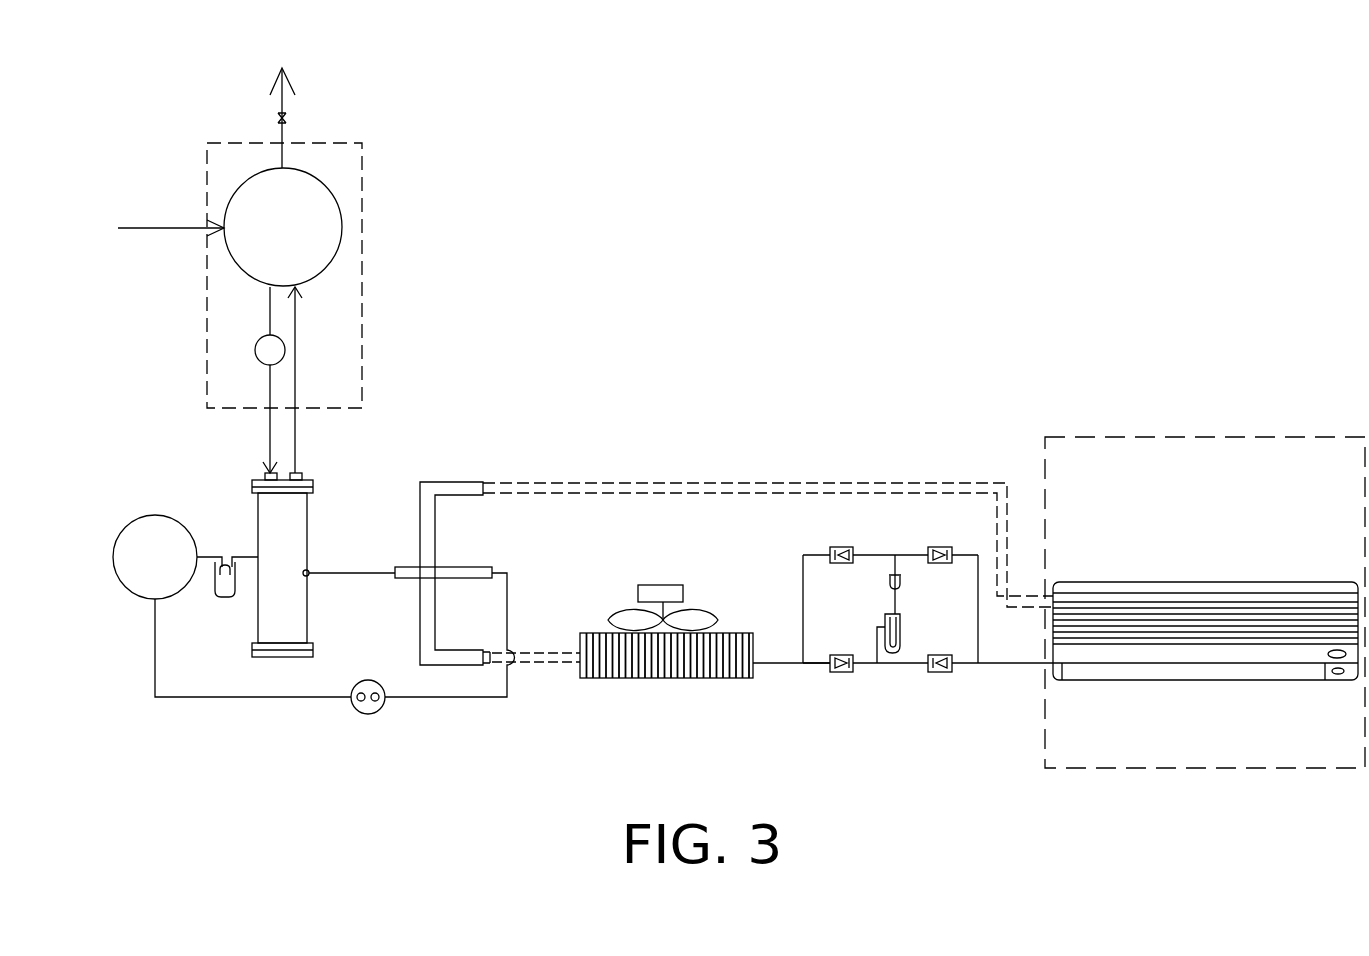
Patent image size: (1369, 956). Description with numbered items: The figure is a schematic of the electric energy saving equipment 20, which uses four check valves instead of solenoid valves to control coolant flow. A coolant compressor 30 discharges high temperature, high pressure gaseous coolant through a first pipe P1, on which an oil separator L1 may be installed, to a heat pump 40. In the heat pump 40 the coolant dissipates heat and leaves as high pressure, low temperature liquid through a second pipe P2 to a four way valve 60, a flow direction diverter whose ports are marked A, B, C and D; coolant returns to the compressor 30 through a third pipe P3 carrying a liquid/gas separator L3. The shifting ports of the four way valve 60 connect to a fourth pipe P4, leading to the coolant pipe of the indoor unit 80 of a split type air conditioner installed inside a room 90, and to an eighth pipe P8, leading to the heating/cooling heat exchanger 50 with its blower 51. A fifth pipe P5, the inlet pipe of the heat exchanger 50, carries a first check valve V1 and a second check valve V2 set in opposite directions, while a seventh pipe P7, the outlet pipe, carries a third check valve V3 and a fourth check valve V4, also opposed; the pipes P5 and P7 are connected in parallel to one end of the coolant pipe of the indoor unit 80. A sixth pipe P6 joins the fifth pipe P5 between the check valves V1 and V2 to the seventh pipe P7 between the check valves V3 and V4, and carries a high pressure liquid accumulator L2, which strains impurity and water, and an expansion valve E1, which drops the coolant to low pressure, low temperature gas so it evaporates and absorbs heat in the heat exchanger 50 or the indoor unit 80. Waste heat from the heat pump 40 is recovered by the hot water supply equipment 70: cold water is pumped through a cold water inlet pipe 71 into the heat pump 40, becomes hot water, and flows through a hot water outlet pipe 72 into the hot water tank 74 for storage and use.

The electric energy saving equipment 20 is at (788, 143).
The coolant compressor 30 is at (113, 555).
The heat pump 40 is at (307, 535).
The heating/cooling heat exchanger 50 is at (582, 633).
The blower 51 is at (683, 587).
The four way valve 60 is at (450, 480).
The hot water supply equipment 70 is at (330, 142).
The cold water inlet pipe 71 is at (268, 384).
The hot water outlet pipe 72 is at (297, 385).
The hot water tank 74 is at (342, 227).
The indoor unit of split type air conditioner 80 is at (1197, 580).
The room 90 is at (1328, 472).
The first pipe P1 is at (208, 550).
The second pipe P2 is at (350, 575).
The third pipe P3 is at (202, 693).
The fourth pipe P4 is at (652, 482).
The fifth pipe P5 is at (880, 553).
The sixth pipe P6 is at (897, 605).
The seventh pipe P7 is at (785, 667).
The eighth pipe P8 is at (535, 663).
The oil separator L1 is at (225, 591).
The high pressure liquid accumulator L2 is at (906, 633).
The liquid/gas separator L3 is at (368, 711).
The first check valve V1 is at (841, 543).
The second check valve V2 is at (940, 543).
The third check valve V3 is at (841, 676).
The fourth check valve V4 is at (940, 676).
The expansion valve E1 is at (909, 582).
The valve port A is at (403, 555).
The valve port B is at (478, 472).
The valve port C is at (480, 638).
The valve port D is at (486, 553).